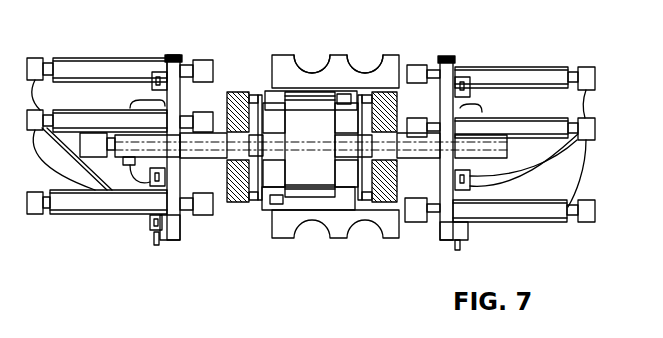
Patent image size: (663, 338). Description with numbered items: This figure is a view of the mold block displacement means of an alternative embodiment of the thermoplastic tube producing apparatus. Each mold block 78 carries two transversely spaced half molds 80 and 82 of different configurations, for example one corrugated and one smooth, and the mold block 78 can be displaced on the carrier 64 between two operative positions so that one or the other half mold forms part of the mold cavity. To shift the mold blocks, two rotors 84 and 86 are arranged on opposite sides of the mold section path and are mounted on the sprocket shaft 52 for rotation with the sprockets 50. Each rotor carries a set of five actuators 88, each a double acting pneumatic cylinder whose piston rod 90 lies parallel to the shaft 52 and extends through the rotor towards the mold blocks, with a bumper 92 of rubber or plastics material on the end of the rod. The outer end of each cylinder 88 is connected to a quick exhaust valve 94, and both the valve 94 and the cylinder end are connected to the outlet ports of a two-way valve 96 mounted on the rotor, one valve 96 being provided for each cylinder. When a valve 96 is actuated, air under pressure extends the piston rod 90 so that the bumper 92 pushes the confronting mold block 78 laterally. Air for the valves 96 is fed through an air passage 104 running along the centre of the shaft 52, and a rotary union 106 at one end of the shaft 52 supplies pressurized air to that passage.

The sprockets 50 is at (259, 178).
The sprocket shaft 52 is at (348, 155).
The carrier 64 is at (267, 97).
The mold block 78 is at (291, 51).
The half mold 80 is at (309, 70).
The half mold 82 is at (364, 70).
The rotor 84 is at (173, 208).
The rotor 86 is at (444, 212).
The actuator 88 is at (130, 202).
The piston rod 90 is at (437, 63).
The bumper 92 is at (433, 85).
The quick exhaust valve 94 is at (588, 80).
The two-way valve 96 is at (468, 85).
The air passage 104 is at (302, 143).
The rotary union 106 is at (97, 140).